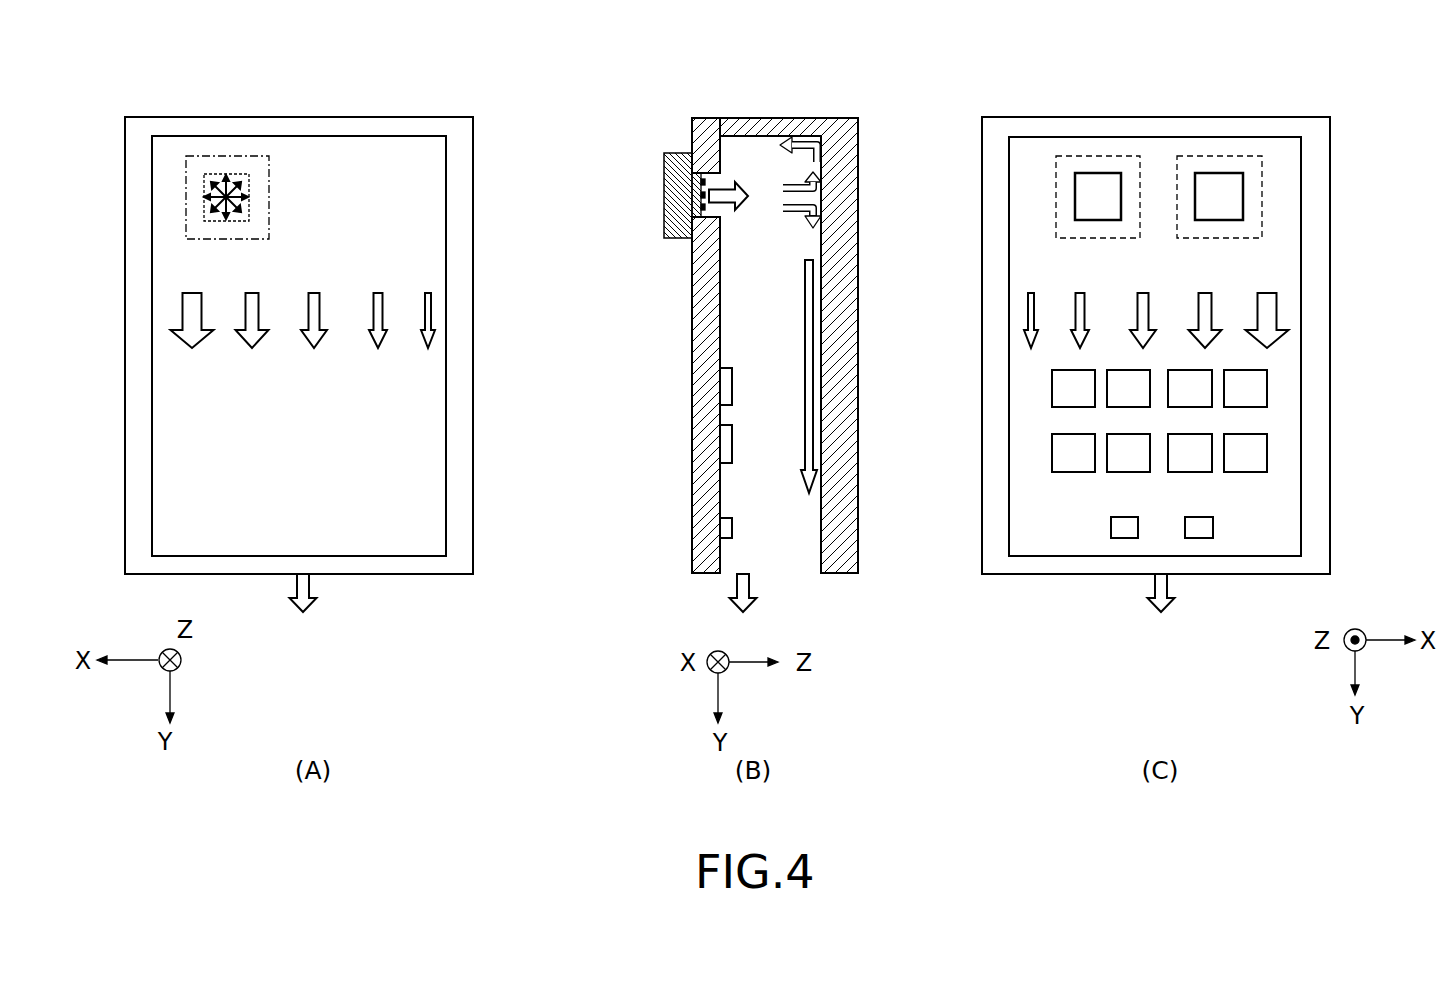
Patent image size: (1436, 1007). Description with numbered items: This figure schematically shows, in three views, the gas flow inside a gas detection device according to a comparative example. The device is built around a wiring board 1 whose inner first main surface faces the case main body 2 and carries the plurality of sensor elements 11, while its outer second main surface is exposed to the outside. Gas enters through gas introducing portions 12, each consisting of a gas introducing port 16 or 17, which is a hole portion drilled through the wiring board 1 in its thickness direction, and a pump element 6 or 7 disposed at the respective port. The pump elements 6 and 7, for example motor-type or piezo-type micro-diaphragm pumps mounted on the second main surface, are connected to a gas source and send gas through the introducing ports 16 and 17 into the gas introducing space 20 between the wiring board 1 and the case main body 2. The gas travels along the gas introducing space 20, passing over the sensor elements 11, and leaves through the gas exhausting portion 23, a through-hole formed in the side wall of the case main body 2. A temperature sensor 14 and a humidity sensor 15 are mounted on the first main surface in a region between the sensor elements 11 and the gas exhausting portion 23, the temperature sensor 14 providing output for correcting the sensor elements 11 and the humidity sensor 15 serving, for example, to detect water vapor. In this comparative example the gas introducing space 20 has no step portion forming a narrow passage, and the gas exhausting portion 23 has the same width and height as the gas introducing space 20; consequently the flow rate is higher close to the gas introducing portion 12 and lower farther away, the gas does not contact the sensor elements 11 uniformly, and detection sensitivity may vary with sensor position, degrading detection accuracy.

The wiring board 1 is at (703, 380).
The case main body 2 is at (397, 127).
The pump element 6 is at (675, 178).
The pump element 7 is at (218, 156).
The sensor element 11 is at (725, 445).
The gas introducing portion 12 is at (165, 61).
The temperature sensor 14 is at (1119, 528).
The humidity sensor 15 is at (1200, 528).
The gas introducing port 16 is at (712, 182).
The gas introducing port 17 is at (249, 175).
The gas introducing space 20 is at (176, 430).
The gas exhausting portion 23 is at (443, 567).